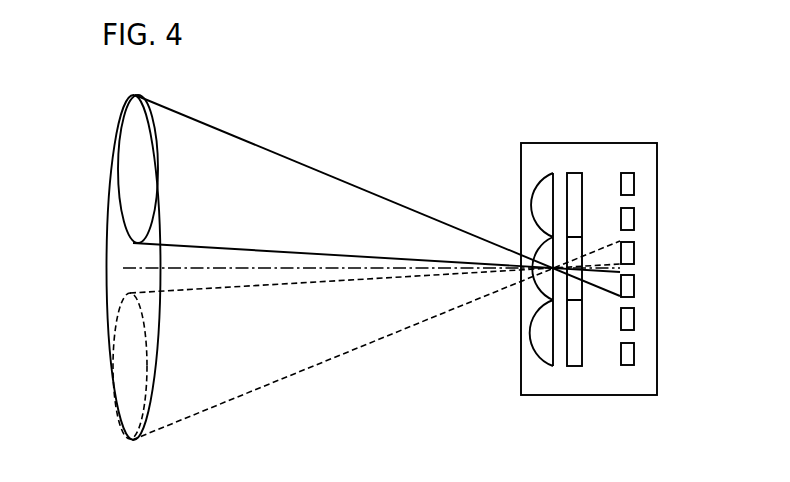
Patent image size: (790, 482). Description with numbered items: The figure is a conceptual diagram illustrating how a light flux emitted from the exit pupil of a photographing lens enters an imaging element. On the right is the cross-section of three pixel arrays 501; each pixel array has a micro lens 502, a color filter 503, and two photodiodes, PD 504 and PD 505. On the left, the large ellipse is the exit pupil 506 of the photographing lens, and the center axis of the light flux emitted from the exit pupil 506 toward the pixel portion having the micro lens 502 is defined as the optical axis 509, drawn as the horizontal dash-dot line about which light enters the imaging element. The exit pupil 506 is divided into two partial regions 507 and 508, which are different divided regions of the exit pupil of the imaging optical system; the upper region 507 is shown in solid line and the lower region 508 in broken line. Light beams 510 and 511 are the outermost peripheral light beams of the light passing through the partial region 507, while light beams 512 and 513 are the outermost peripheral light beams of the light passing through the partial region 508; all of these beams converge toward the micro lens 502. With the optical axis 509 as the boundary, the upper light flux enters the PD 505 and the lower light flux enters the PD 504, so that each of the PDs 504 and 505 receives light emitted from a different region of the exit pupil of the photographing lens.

The cross-section of three pixel arrays 501 is at (657, 365).
The micro lens 502 is at (548, 237).
The color filter 503 is at (574, 172).
The PD 504 is at (634, 249).
The PD 505 is at (634, 285).
The exit pupil 506 is at (107, 258).
The partial region 507 is at (118, 190).
The partial region 508 is at (113, 322).
The optical axis 509 is at (303, 268).
The light beam 510 is at (233, 133).
The light beam 511 is at (318, 200).
The light beam 512 is at (276, 380).
The light beam 513 is at (200, 378).